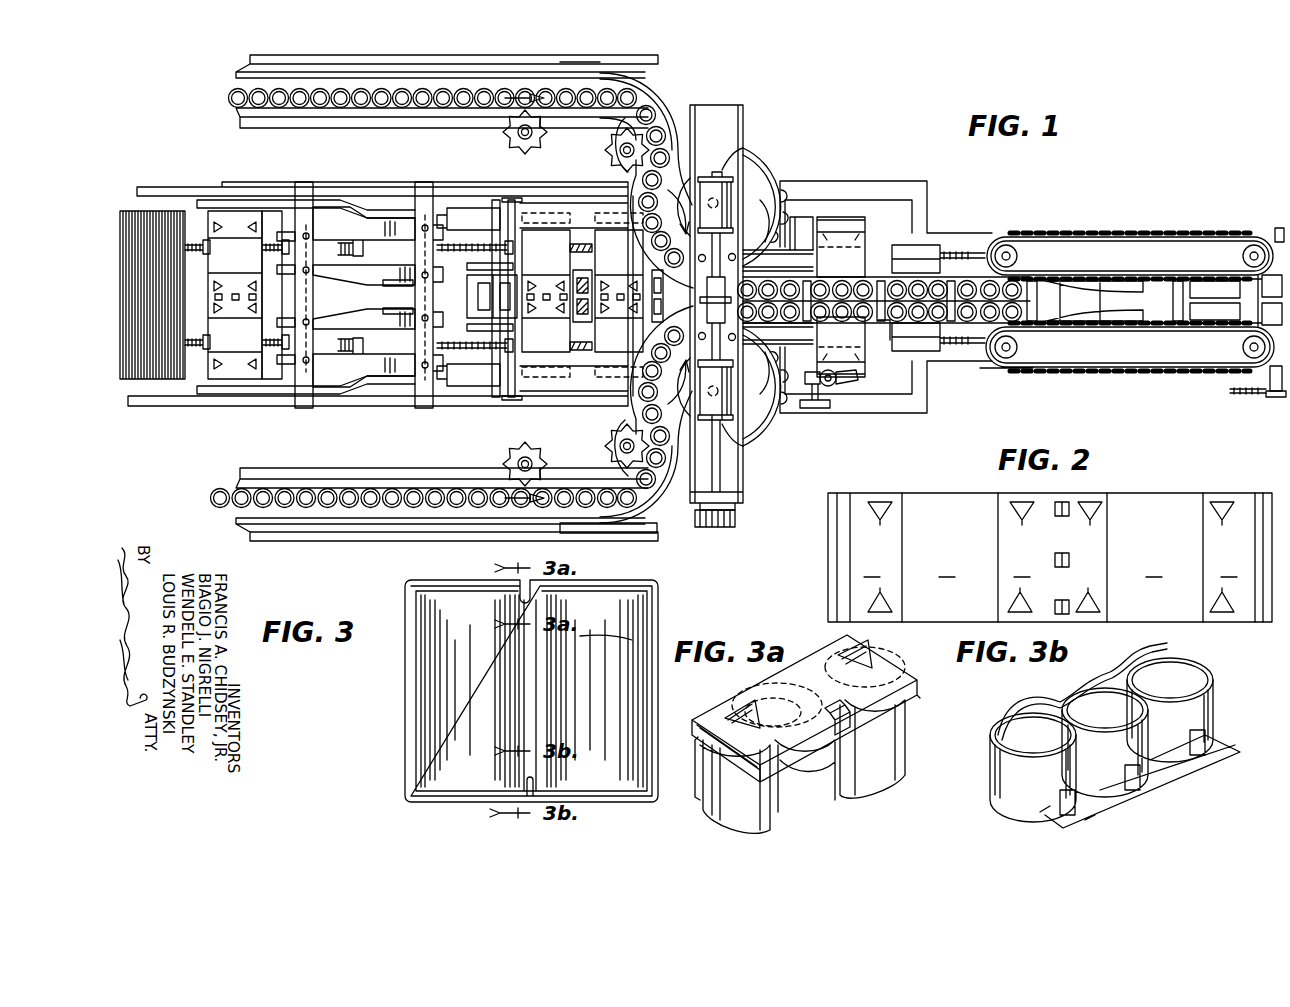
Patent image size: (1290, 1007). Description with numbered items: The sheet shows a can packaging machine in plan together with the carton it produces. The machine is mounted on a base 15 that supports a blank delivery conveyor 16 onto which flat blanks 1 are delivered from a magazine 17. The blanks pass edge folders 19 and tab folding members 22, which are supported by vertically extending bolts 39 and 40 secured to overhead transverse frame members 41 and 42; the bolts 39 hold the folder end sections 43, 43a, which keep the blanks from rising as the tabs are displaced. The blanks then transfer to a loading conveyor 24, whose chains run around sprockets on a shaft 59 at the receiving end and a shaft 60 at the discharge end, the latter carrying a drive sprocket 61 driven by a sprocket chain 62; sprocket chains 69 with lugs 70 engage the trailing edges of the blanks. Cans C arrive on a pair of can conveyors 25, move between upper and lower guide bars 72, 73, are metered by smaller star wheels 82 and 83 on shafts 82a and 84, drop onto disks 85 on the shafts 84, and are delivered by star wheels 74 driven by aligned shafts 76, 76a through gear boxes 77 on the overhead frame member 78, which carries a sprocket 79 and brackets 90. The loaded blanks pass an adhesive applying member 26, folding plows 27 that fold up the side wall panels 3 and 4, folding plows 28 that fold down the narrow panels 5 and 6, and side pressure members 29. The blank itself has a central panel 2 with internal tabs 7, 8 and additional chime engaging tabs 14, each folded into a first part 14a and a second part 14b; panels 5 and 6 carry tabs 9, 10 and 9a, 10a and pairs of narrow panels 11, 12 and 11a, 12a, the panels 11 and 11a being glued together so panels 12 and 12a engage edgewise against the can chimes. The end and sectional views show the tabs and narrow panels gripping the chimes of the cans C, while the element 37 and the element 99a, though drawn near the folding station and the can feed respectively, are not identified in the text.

In FIG. 1, the blank 1 is at (229, 216).
In FIG. 2, the central panel 2 is at (1022, 567).
In FIG. 2, the side wall panel 3 is at (947, 567).
In FIG. 2, the side wall panel 4 is at (1154, 567).
In FIG. 2, the narrow panel 5 is at (872, 567).
In FIG. 2, the narrow panel 6 is at (1229, 567).
In FIG. 2, the internal tab 7 is at (1090, 504).
In FIG. 2, the internal tab 8 is at (1010, 603).
In FIG. 2, the tab 9 is at (884, 492).
In FIG. 3A, the tab 9 is at (905, 680).
In FIG. 2, the tab 9a is at (1222, 497).
In FIG. 2, the tab 10 is at (868, 600).
In FIG. 3A, the tab 10 is at (760, 712).
In FIG. 2, the tab 10a is at (1222, 615).
In FIG. 2, the narrow panel 11 is at (845, 525).
In FIG. 2, the narrow panel 11a is at (1258, 497).
In FIG. 2, the narrow panel 12 is at (835, 556).
In FIG. 2, the narrow panel 12a is at (1270, 497).
In FIG. 2, the chime engaging tab 14 is at (1063, 600).
In FIG. 3, the first tab part 14a is at (540, 790).
In FIG. 3B, the first tab part 14a is at (1158, 790).
In FIG. 3, the second tab part 14b is at (522, 790).
In FIG. 3B, the second tab part 14b is at (1128, 782).
In FIG. 1, the base 15 is at (820, 185).
In FIG. 1, the blank delivery conveyor 16 is at (273, 216).
In FIG. 1, the magazine 17 is at (162, 200).
In FIG. 1, the edge folder 19 is at (262, 205).
In FIG. 1, the tab folding member 22 is at (378, 272).
In FIG. 1, the loading conveyor 24 is at (582, 238).
In FIG. 1, the can conveyor 25 is at (243, 60).
In FIG. 1, the adhesive applying member 26 is at (836, 398).
In FIG. 1, the folding plow 27 is at (887, 238).
In FIG. 1, the folding plow 28 is at (1083, 278).
In FIG. 1, the side pressure member 29 is at (1175, 229).
In FIG. 1, the guide block 37 is at (463, 215).
In FIG. 1, the bolt 39 is at (306, 408).
In FIG. 1, the bolt 40 is at (424, 404).
In FIG. 1, the frame member 41 is at (313, 400).
In FIG. 1, the frame member 42 is at (505, 400).
In FIG. 1, the folder end section 43 is at (287, 328).
In FIG. 1, the folder end section 43a is at (288, 365).
In FIG. 1, the shaft 59 is at (485, 360).
In FIG. 1, the shaft 60 is at (1275, 392).
In FIG. 1, the drive sprocket 61 is at (1283, 398).
In FIG. 1, the sprocket chain 62 is at (1244, 393).
In FIG. 1, the sprocket chain 69 is at (190, 345).
In FIG. 1, the lug 70 is at (590, 268).
In FIG. 1, the upper guide bar 72 is at (545, 127).
In FIG. 1, the lower guide bar 73 is at (652, 125).
In FIG. 1, the star wheel 74 is at (760, 200).
In FIG. 1, the shaft 76 is at (718, 472).
In FIG. 1, the shaft 76a is at (765, 200).
In FIG. 1, the gear box 77 is at (735, 200).
In FIG. 1, the overhead frame member 78 is at (742, 118).
In FIG. 1, the sprocket 79 is at (725, 527).
In FIG. 1, the star wheel 82 is at (528, 458).
In FIG. 1, the shaft 82a is at (525, 128).
In FIG. 1, the star wheel 83 is at (655, 78).
In FIG. 1, the shaft 84 is at (631, 137).
In FIG. 1, the disk 85 is at (612, 122).
In FIG. 1, the bracket 90 is at (802, 262).
In FIG. 1, the guide block 99a is at (948, 245).
In FIG. 1, the can C is at (320, 108).